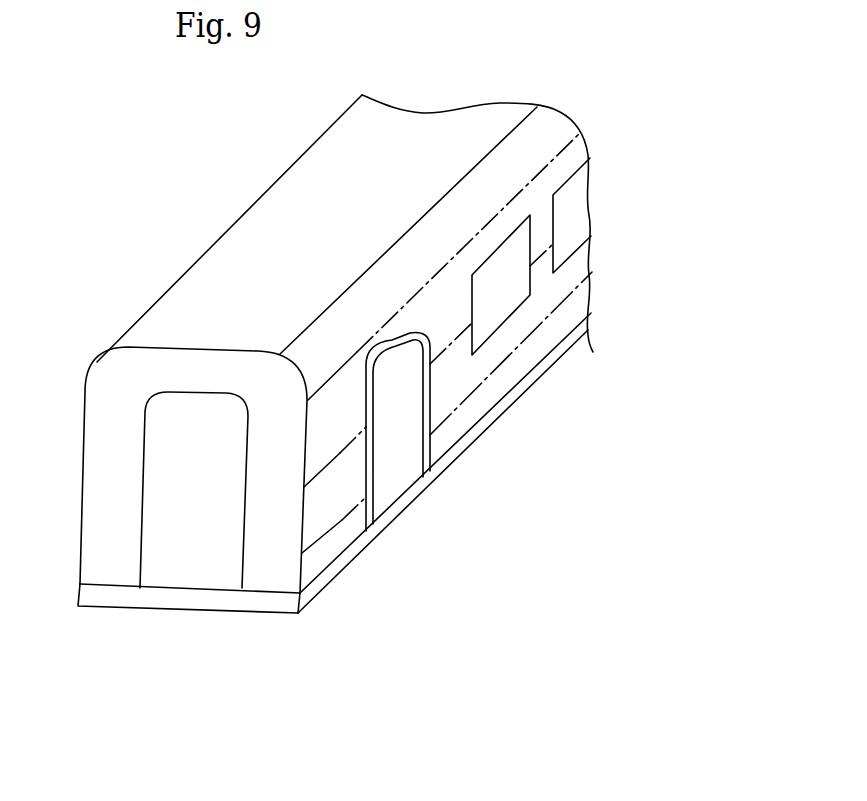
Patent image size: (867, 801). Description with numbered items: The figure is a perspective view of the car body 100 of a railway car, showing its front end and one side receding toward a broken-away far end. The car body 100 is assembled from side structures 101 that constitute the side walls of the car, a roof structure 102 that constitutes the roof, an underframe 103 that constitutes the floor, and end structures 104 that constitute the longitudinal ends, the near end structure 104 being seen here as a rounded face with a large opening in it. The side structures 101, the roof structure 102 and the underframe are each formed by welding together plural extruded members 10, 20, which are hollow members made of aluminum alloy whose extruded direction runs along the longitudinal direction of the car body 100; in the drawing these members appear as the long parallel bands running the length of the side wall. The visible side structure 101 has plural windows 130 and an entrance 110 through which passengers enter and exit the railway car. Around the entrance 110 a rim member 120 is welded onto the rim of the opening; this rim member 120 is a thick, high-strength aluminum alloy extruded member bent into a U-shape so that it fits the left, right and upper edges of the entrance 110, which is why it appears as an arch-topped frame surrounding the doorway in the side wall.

The car body 100 is at (237, 187).
The roof structure 102 is at (205, 313).
The extruded member 10 is at (579, 147).
The extruded member 20 is at (467, 373).
The window 130 is at (578, 212).
The rim member 120 is at (360, 512).
The entrance 110 is at (402, 467).
The side structure 101 is at (540, 387).
The underframe 103 is at (182, 600).
The end structure 104 is at (270, 570).